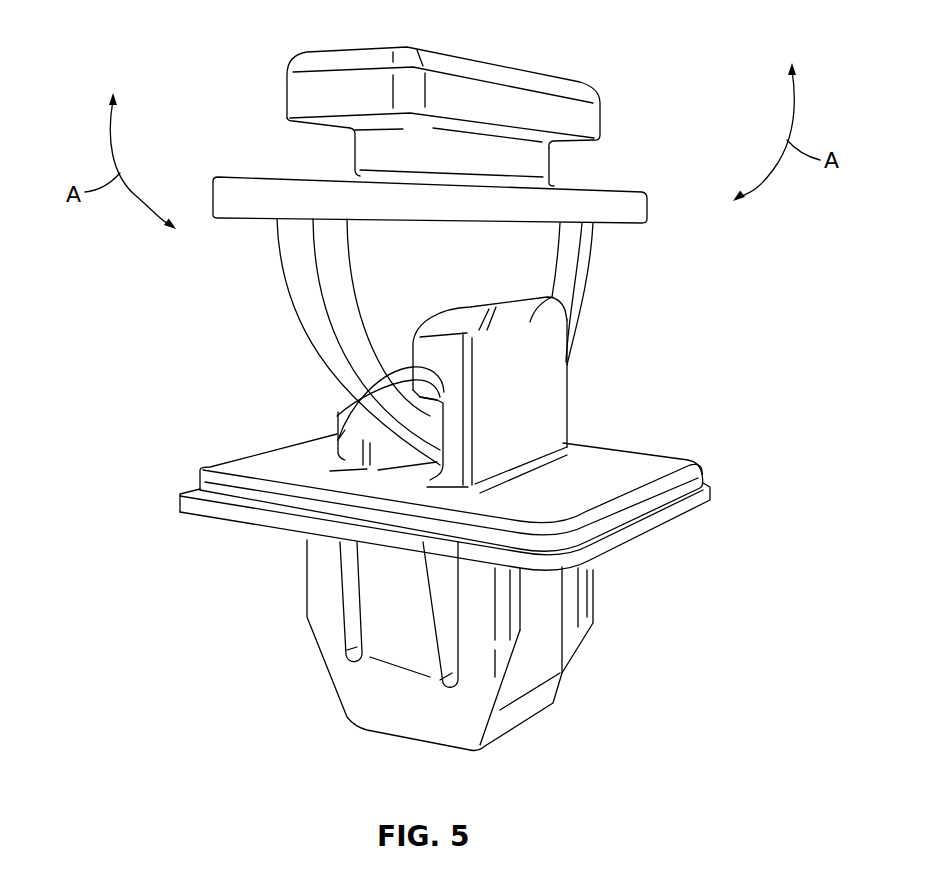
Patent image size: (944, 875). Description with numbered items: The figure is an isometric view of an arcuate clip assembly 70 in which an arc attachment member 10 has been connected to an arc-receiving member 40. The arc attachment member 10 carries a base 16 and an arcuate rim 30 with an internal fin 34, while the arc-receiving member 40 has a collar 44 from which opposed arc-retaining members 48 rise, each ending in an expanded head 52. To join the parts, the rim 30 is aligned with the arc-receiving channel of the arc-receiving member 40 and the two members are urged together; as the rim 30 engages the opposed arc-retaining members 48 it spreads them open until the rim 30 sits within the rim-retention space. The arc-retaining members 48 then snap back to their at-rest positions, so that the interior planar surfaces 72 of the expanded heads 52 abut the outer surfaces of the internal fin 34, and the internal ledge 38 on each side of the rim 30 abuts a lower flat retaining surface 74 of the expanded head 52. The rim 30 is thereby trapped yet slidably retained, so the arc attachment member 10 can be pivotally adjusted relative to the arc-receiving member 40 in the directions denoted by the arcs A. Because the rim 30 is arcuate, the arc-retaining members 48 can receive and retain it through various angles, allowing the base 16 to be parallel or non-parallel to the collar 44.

The arc attachment member 10 is at (626, 245).
The base 16 is at (244, 173).
The rim 30 is at (330, 360).
The internal fin 34 is at (402, 270).
The internal ledge 38 is at (417, 400).
The arc-receiving member 40 is at (753, 424).
The collar 44 is at (653, 455).
The arc-retaining member 48 is at (567, 405).
The expanded head 52 is at (552, 297).
The arcuate clip assembly 70 is at (252, 34).
The interior planar surface 72 is at (337, 416).
The lower flat retaining surface 74 is at (378, 397).